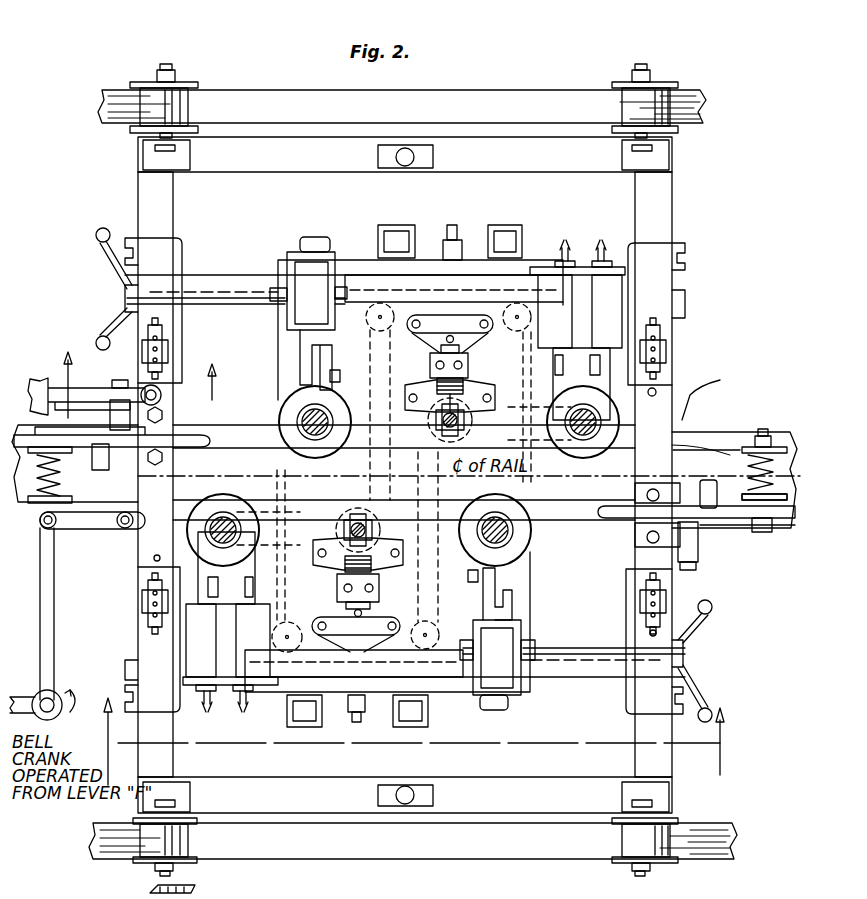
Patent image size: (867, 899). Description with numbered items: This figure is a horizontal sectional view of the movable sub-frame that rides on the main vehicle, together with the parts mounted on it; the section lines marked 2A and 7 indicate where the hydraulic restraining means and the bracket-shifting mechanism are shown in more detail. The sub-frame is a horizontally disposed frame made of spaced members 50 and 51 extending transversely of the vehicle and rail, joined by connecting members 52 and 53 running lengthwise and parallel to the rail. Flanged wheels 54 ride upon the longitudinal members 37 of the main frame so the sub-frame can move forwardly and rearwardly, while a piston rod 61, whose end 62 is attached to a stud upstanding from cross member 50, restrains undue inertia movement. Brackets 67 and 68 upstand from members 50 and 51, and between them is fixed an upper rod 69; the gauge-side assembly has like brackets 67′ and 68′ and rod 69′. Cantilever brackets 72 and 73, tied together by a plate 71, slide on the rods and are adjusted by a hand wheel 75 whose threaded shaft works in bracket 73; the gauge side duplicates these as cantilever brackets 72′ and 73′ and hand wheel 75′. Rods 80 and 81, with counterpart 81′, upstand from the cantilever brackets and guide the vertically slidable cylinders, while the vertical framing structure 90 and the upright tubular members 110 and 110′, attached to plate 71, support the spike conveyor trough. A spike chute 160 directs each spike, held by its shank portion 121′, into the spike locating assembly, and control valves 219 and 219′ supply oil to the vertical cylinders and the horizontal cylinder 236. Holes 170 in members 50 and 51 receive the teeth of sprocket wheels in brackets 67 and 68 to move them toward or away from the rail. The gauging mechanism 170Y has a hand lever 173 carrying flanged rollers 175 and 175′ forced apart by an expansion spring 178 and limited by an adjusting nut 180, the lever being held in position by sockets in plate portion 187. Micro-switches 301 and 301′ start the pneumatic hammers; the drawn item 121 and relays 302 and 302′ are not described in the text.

The member 37 is at (300, 117).
The cross member 50 is at (173, 207).
The cross member 51 is at (635, 207).
The connecting member 52 is at (330, 167).
The connecting member 53 is at (510, 807).
The flanged wheel 54 is at (150, 95).
The piston rod 61 is at (80, 385).
The end of piston rod 62 is at (163, 393).
The bracket 67 is at (131, 653).
The bracket 67′ is at (681, 296).
The bracket 68 is at (681, 593).
The bracket 68′ is at (182, 262).
The upper rod 69 is at (585, 658).
The upper rod 69′ is at (222, 292).
The plate 71 is at (268, 690).
The cantilever bracket 72 is at (205, 595).
The cantilever bracket 72′ is at (660, 392).
The cantilever bracket 73 is at (512, 570).
The cantilever bracket 73′ is at (300, 322).
The hand wheel 75 is at (700, 642).
The hand wheel 75′ is at (112, 262).
The rod 80 is at (592, 440).
The rod 81 is at (503, 520).
The rod 81′ is at (290, 410).
The vertical framing structure 90 is at (355, 333).
The upright tubular member 110 is at (305, 728).
The upright tubular member 110′ is at (397, 225).
The coupling 121 is at (352, 518).
The shank portion of spike 121′ is at (440, 420).
The spike chute 160 is at (490, 306).
The hole 170 is at (726, 365).
The gauging mechanism 170Y is at (725, 450).
The hand lever 173 is at (212, 437).
The flanged roller 175 is at (752, 445).
The flanged roller 175′ is at (745, 525).
The expansion spring 178 is at (58, 478).
The adjusting nut 180 is at (768, 428).
The plate portion 187 is at (165, 460).
The control valve 219 is at (500, 680).
The control valve 219′ is at (308, 262).
The horizontal cylinder 236 is at (370, 660).
The micro-switch 301 is at (262, 652).
The relay 302 is at (210, 652).
The micro-switch 301′ is at (565, 309).
The relay 302′ is at (613, 309).
The section line 2A is at (127, 375).
The section line 7 is at (410, 741).